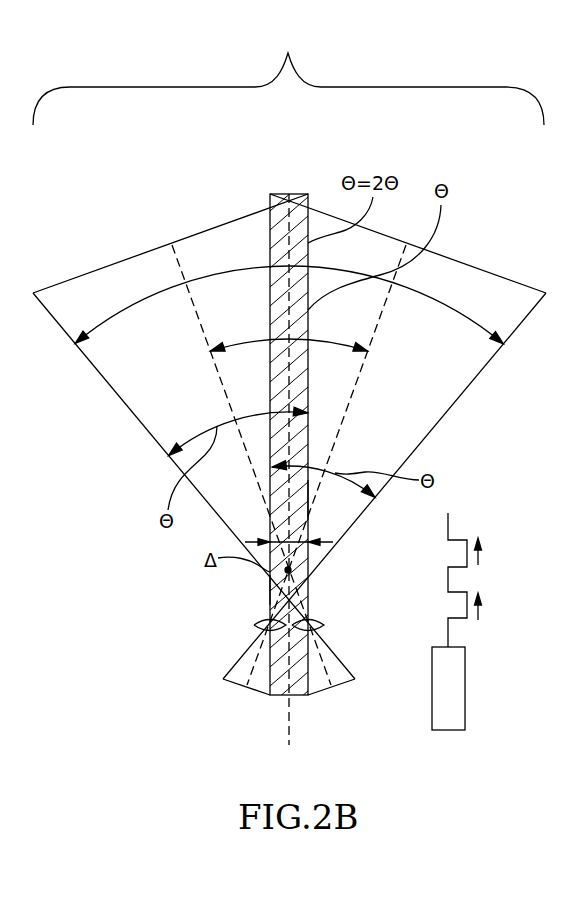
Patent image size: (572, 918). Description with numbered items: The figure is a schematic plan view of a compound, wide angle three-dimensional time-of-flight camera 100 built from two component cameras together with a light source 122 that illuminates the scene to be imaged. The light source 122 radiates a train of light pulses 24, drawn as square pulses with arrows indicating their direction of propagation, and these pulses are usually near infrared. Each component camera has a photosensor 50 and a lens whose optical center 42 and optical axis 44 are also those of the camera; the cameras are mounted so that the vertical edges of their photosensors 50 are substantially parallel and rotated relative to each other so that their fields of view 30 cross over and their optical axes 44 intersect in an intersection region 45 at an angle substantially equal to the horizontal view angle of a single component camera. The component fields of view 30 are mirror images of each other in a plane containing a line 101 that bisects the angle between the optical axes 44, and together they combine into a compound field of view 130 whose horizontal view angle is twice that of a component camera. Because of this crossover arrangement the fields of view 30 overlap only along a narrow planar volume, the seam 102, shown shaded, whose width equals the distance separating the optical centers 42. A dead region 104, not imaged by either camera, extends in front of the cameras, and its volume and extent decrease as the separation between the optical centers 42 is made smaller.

The compound FOV 130 is at (288, 78).
The compound 3D TOF camera 100 is at (97, 183).
The FOV 30 is at (124, 256).
The seam 102 is at (270, 298).
The optical axis 44 is at (206, 338).
The line 101 is at (308, 500).
The dead region 104 is at (303, 595).
The intersection region 45 is at (270, 590).
The optical center 42 is at (262, 634).
The photosensor 50 is at (232, 691).
The light pulses 24 is at (460, 568).
The light source 122 is at (450, 688).